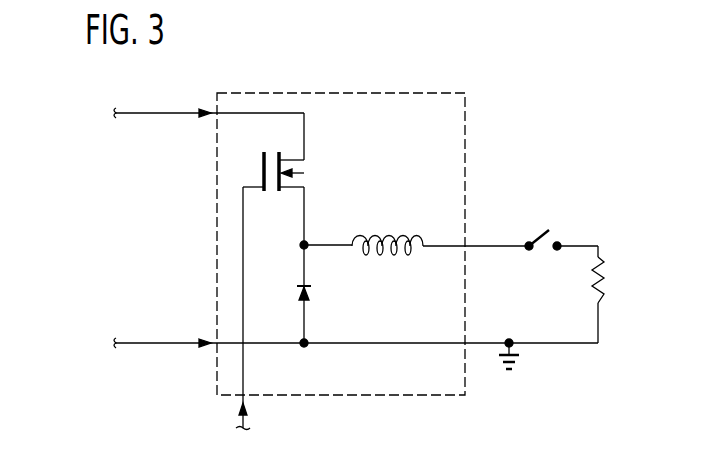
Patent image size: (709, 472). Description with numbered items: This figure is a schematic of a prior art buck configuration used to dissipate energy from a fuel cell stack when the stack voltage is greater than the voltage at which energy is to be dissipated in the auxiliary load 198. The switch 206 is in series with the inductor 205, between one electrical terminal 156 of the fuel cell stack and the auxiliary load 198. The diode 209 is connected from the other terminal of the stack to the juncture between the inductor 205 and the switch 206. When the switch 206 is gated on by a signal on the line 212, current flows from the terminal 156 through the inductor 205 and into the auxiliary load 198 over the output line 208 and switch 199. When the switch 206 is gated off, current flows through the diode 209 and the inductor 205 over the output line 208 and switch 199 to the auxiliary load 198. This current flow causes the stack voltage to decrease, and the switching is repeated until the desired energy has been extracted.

The electrical terminal 156 is at (176, 112).
The switch 206 is at (301, 169).
The inductor 205 is at (362, 234).
The output line 208 is at (449, 248).
The switch 199 is at (534, 228).
The auxiliary load 198 is at (605, 266).
The diode 209 is at (309, 289).
The line 212 is at (238, 420).